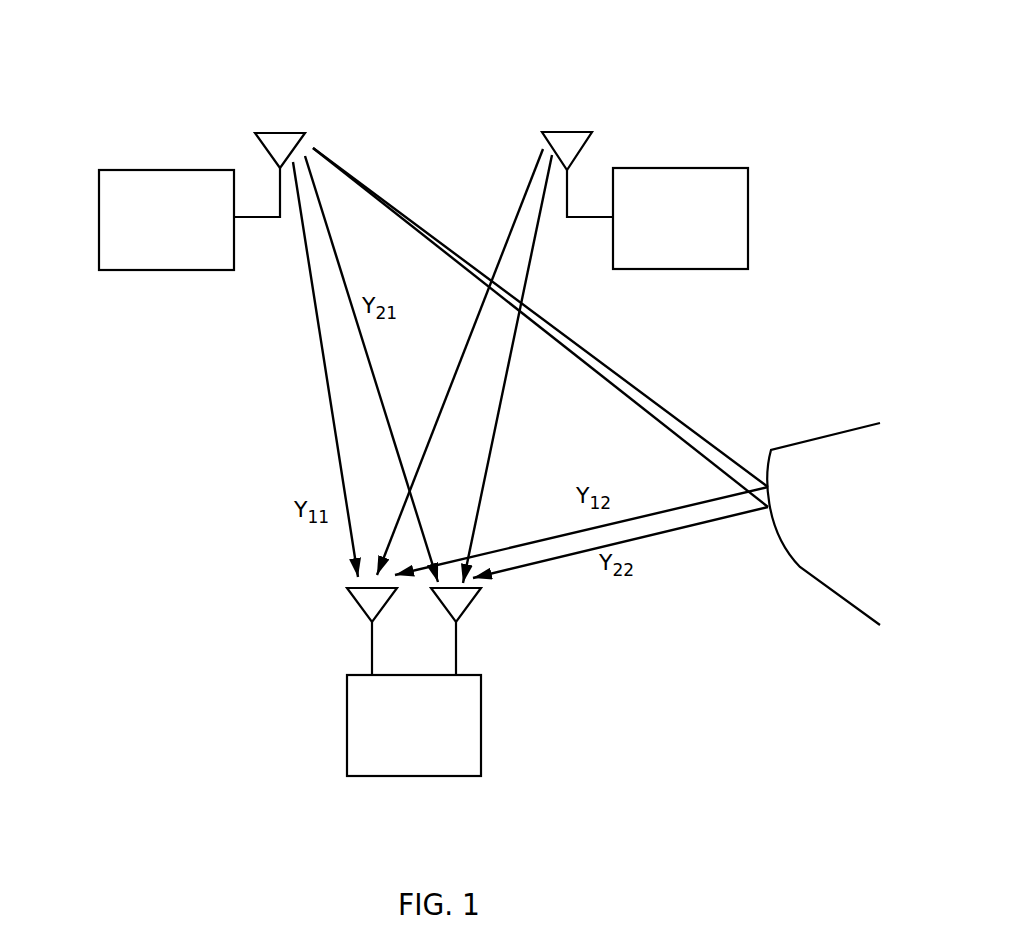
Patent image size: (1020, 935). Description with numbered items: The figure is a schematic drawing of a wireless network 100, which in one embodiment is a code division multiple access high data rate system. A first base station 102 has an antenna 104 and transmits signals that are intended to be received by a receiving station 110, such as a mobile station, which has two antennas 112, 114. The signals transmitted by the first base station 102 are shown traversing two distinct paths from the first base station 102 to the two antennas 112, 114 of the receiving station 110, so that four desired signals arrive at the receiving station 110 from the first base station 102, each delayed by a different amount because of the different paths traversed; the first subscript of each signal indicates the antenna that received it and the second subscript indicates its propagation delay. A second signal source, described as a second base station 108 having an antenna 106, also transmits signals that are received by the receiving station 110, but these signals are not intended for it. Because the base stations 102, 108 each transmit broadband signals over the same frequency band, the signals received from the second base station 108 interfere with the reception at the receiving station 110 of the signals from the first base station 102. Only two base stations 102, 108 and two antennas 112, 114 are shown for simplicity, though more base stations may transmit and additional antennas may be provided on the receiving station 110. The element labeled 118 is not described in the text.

The wireless network 100 is at (69, 31).
The first base station 102 is at (162, 170).
The antenna 104 is at (280, 133).
The antenna 106 is at (560, 132).
The second base station 108 is at (687, 168).
The receiving station 110 is at (410, 777).
The antenna 112 is at (358, 607).
The antenna 114 is at (468, 607).
The reflecting object 118 is at (812, 573).